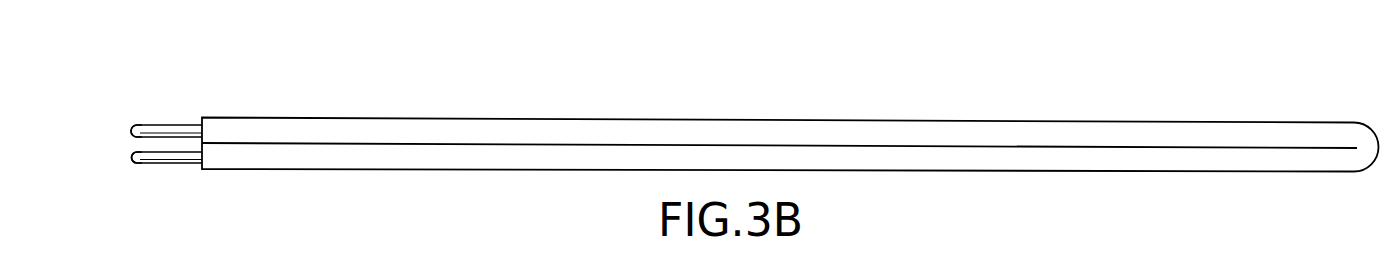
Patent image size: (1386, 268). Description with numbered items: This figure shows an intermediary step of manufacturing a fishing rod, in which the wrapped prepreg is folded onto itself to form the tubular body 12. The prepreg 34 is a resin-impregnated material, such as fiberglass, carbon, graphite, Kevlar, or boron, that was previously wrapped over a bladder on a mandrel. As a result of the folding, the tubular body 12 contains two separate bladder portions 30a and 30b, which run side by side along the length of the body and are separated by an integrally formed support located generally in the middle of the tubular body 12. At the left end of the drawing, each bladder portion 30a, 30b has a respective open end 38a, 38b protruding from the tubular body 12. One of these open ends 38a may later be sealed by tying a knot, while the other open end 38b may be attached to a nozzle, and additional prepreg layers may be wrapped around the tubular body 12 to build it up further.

The tubular body 12 is at (942, 108).
The prepreg 34 is at (660, 128).
The bladder portion 30a is at (155, 128).
The bladder portion 30b is at (167, 158).
The open end 38a is at (136, 130).
The open end 38b is at (136, 157).